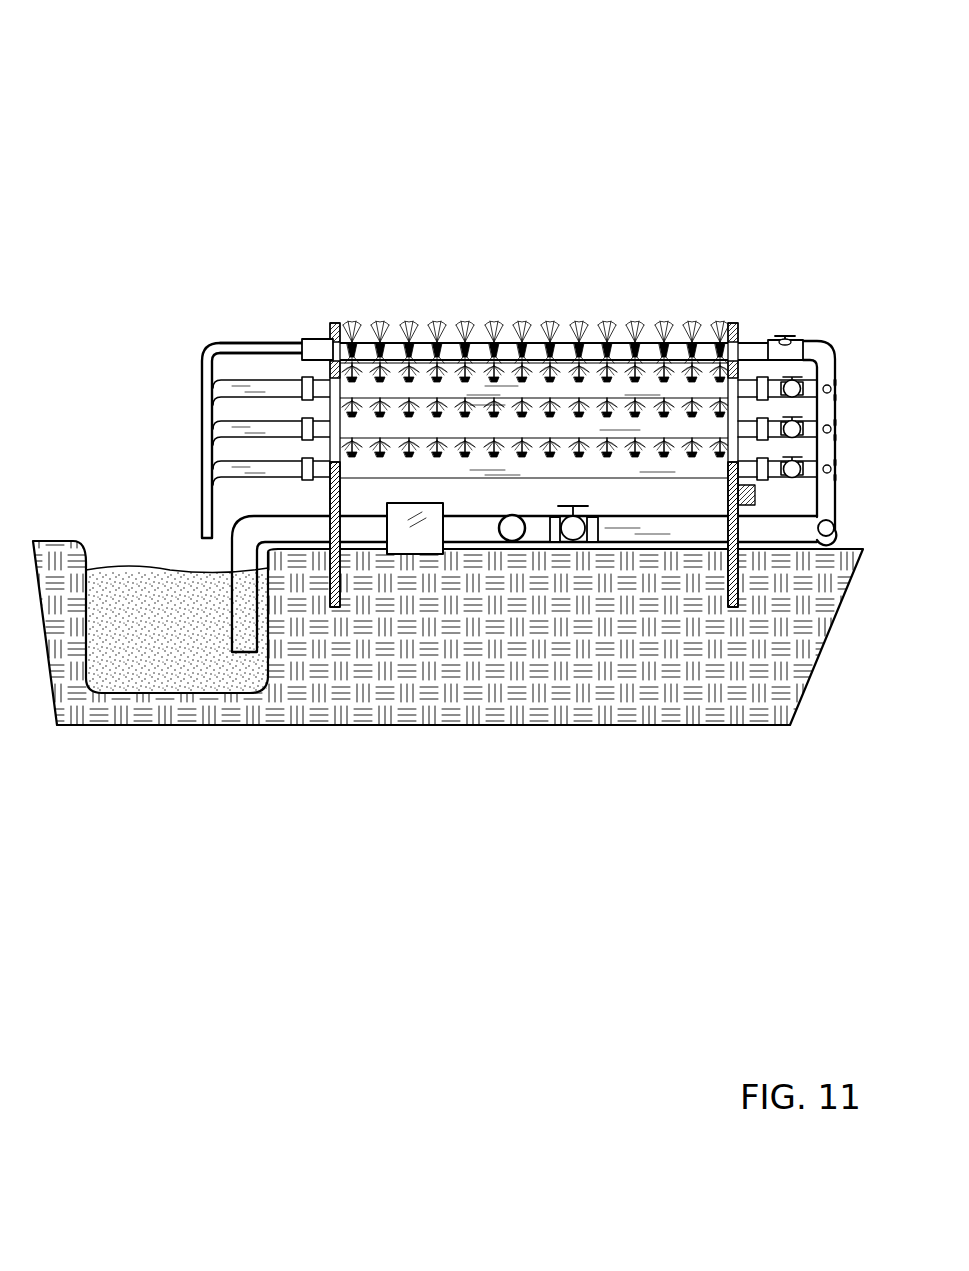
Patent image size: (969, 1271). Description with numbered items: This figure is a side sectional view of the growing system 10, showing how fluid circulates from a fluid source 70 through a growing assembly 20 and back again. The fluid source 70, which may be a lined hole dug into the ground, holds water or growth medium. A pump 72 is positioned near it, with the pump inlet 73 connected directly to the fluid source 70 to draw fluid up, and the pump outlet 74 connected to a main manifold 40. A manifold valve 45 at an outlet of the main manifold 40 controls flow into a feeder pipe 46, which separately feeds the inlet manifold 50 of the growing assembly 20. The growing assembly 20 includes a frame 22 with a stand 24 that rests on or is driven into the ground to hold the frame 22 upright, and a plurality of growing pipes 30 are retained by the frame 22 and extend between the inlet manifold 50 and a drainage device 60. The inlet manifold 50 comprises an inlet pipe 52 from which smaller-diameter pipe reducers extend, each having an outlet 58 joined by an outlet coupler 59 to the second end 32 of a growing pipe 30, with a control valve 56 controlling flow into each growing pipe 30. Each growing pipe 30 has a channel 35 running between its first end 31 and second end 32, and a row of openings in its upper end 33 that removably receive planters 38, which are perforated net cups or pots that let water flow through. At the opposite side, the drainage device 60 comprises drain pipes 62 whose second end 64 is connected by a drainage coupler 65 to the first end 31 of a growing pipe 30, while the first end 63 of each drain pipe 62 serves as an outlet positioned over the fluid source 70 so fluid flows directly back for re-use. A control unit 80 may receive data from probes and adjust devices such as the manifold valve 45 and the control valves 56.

The growing system 10 is at (196, 106).
The growing assembly 20 is at (322, 498).
The frame 22 is at (300, 408).
The stand 24 is at (330, 583).
The growing pipe 30 is at (618, 343).
The first end 31 is at (320, 343).
The second end 32 is at (752, 343).
The upper end 33 is at (533, 343).
The channel 35 is at (422, 342).
The planter 38 is at (437, 343).
The main manifold 40 is at (517, 528).
The manifold valve 45 is at (573, 540).
The feeder pipe 46 is at (658, 538).
The inlet manifold 50 is at (799, 328).
The inlet pipe 52 is at (837, 348).
The control valve 56 is at (793, 340).
The outlet 58 is at (764, 343).
The outlet coupler 59 is at (760, 343).
The drainage device 60 is at (204, 337).
The drain pipe 62 is at (247, 342).
The first end 63 is at (203, 540).
The second end 64 is at (295, 343).
The drainage coupler 65 is at (307, 339).
The fluid source 70 is at (115, 587).
The pump 72 is at (412, 543).
The pump inlet 73 is at (373, 530).
The pump outlet 74 is at (450, 543).
The control unit 80 is at (753, 507).